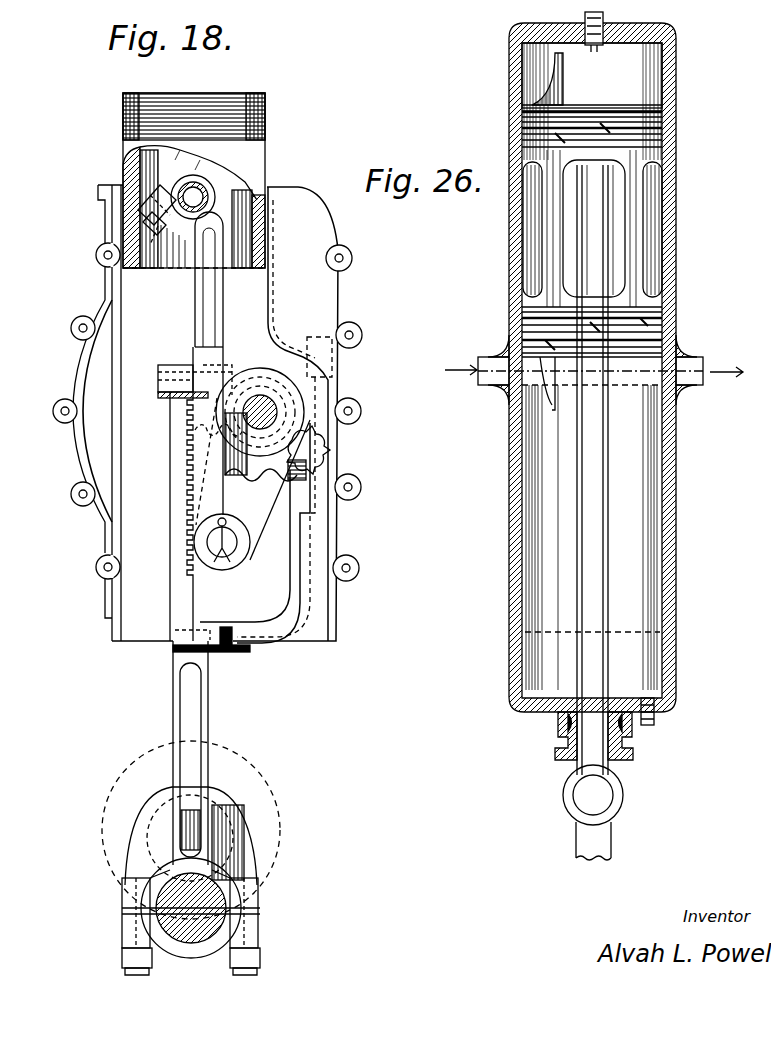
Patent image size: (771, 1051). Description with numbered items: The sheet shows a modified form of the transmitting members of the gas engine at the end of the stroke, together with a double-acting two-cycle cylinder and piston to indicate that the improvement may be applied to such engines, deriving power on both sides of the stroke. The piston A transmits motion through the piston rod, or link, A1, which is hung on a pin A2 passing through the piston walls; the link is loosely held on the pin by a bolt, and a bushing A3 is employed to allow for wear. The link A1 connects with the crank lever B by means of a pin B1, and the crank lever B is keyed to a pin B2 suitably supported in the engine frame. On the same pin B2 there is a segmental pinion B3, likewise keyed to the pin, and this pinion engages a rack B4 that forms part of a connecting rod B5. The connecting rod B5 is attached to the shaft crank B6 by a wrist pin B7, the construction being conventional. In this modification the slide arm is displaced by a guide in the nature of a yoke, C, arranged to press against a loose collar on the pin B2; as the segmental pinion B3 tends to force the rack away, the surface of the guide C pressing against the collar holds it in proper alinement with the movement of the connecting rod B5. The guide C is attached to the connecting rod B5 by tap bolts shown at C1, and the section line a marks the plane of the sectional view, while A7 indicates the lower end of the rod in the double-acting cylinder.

In FIG. 18, the piston A is at (123, 140).
In FIG. 18, the piston rod A1 is at (196, 300).
In FIG. 26, the piston rod A1 is at (637, 213).
In FIG. 18, the pin A2 is at (207, 192).
In FIG. 18, the bushing A3 is at (152, 214).
In FIG. 26, the piston rod lower end A7 is at (608, 840).
In FIG. 18, the crank lever B is at (257, 498).
In FIG. 18, the pin B1 is at (230, 545).
In FIG. 18, the pin B2 is at (264, 404).
In FIG. 18, the segmental pinion B3 is at (320, 440).
In FIG. 18, the rack B4 is at (173, 500).
In FIG. 18, the connecting rod B5 is at (184, 696).
In FIG. 18, the shaft crank B6 is at (227, 838).
In FIG. 18, the wrist pin B7 is at (215, 925).
In FIG. 18, the guide C is at (278, 618).
In FIG. 18, the tap bolt C1 is at (190, 365).
In FIG. 18, the section line a is at (330, 411).